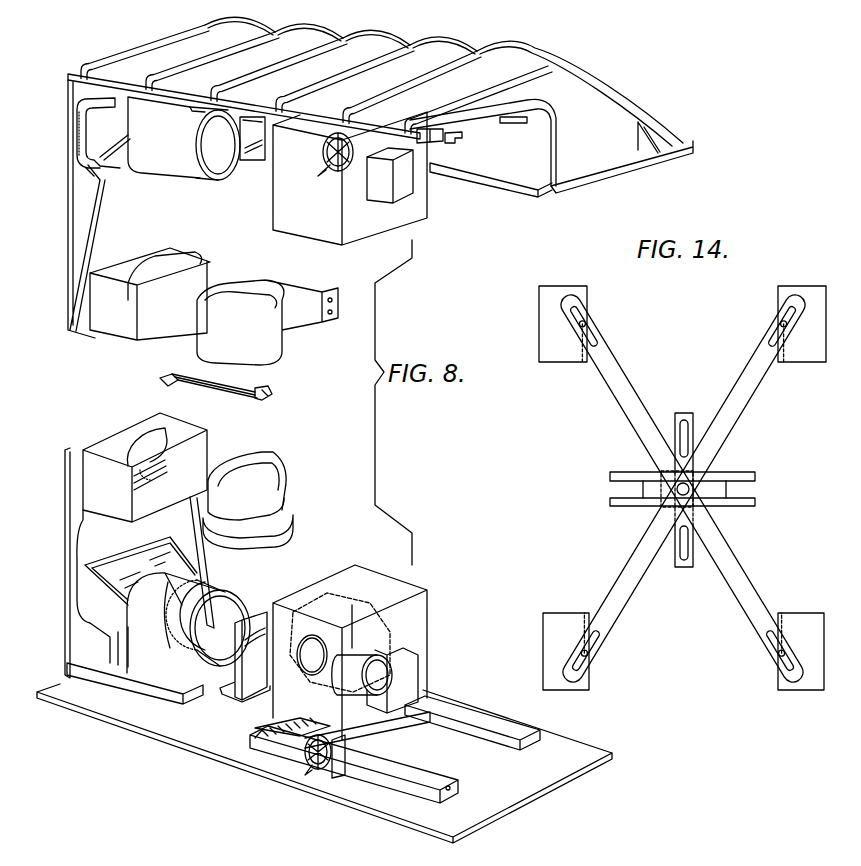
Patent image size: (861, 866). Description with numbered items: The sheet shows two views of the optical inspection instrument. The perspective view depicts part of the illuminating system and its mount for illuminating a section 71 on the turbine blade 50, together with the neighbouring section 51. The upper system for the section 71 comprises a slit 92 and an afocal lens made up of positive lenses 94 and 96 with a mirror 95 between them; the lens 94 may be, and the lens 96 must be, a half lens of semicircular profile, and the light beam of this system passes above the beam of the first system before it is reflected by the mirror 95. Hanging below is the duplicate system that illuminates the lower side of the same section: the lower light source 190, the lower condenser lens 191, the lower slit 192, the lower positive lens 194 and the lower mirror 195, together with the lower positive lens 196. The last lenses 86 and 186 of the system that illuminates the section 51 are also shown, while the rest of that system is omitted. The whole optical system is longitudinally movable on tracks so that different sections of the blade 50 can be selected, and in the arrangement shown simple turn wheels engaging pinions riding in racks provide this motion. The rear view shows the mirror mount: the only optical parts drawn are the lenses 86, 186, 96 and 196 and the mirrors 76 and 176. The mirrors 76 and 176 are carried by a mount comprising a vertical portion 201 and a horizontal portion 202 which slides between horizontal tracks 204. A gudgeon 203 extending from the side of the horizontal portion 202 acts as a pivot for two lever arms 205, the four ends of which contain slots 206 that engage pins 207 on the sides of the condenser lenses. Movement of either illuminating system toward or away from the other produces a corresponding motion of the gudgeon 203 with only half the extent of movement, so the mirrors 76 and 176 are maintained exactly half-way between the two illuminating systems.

In FIG. 8, the turbine blade 50 is at (200, 380).
In FIG. 8, the section 51 is at (262, 388).
In FIG. 8, the section 71 is at (160, 380).
In FIG. 14, the mirror 76 is at (680, 428).
In FIG. 8, the last lens 86 is at (250, 287).
In FIG. 14, the last lens 86 is at (544, 298).
In FIG. 8, the slit 92 is at (258, 164).
In FIG. 8, the positive lens 94 is at (215, 165).
In FIG. 8, the mirror 95 is at (118, 158).
In FIG. 8, the positive lens 96 is at (148, 266).
In FIG. 14, the positive lens 96 is at (806, 298).
In FIG. 14, the mirror 176 is at (682, 552).
In FIG. 8, the last lens 186 is at (255, 466).
In FIG. 14, the last lens 186 is at (554, 618).
In FIG. 8, the lower light source 190 is at (395, 676).
In FIG. 8, the lower condenser lens 191 is at (385, 660).
In FIG. 8, the lower slit 192 is at (254, 615).
In FIG. 8, the lower positive lens 194 is at (216, 596).
In FIG. 8, the lower mirror 195 is at (120, 570).
In FIG. 8, the lower positive lens 196 is at (150, 438).
In FIG. 14, the lower positive lens 196 is at (806, 618).
In FIG. 14, the vertical portion 201 is at (694, 413).
In FIG. 14, the horizontal portion 202 is at (718, 490).
In FIG. 14, the gudgeon 203 is at (698, 475).
In FIG. 14, the horizontal tracks 204 is at (755, 477).
In FIG. 14, the lever arms 205 is at (738, 600).
In FIG. 14, the slots 206 is at (588, 310).
In FIG. 14, the pins 207 is at (588, 325).